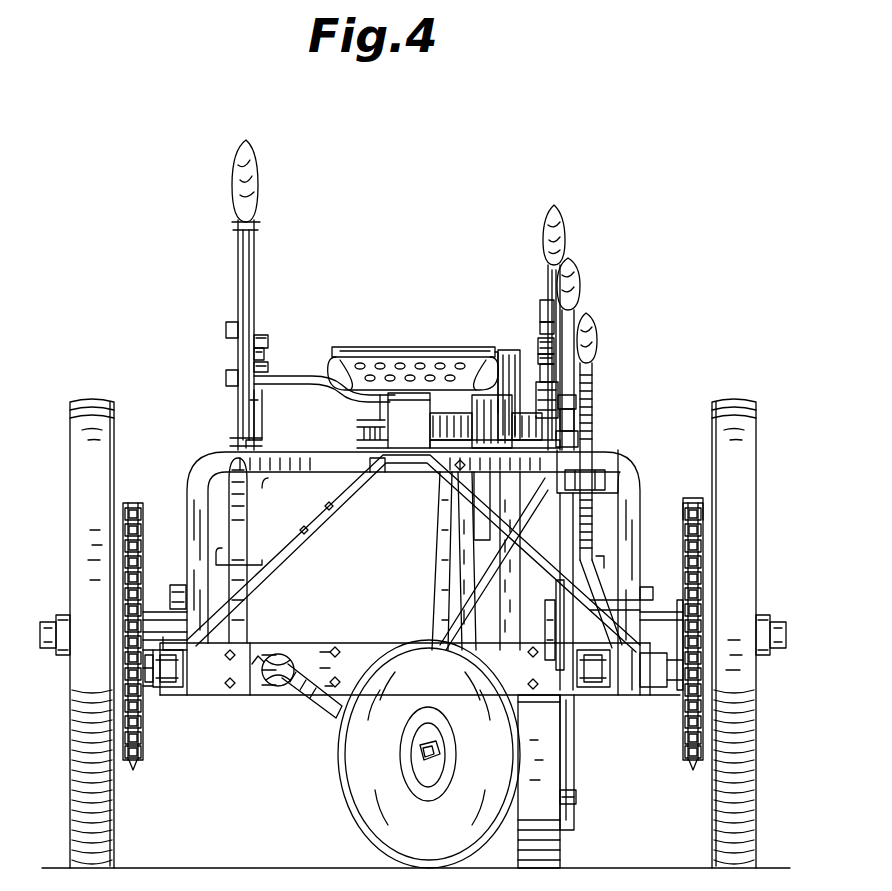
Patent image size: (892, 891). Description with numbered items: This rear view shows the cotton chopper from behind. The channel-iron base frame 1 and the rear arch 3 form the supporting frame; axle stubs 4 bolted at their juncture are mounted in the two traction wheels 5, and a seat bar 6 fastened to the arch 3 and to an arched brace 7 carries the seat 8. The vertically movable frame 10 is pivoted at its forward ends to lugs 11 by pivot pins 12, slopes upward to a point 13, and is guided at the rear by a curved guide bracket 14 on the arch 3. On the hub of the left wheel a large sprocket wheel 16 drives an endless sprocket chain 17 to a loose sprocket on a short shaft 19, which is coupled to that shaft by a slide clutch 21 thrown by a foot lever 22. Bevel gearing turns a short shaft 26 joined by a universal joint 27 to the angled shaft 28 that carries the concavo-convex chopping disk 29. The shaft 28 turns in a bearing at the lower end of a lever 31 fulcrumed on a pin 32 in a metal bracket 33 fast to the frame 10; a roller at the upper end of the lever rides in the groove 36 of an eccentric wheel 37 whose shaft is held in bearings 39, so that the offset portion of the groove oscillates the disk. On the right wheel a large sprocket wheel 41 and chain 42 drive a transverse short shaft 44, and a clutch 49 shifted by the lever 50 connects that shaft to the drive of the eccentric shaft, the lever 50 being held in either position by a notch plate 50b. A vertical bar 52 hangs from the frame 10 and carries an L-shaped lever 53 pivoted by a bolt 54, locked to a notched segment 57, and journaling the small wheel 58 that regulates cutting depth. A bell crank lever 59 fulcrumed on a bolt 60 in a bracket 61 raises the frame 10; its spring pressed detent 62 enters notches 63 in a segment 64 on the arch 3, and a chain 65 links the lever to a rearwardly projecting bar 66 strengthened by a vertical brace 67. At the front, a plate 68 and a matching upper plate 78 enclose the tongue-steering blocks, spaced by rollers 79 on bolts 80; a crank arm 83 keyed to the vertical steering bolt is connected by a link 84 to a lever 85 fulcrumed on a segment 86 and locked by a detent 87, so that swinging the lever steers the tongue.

The base frame 1 is at (360, 630).
The rear arch 3 is at (328, 470).
The axle stubs 4 is at (44, 628).
The traction wheels 5 is at (92, 418).
The seat bar 6 is at (409, 420).
The arched brace 7 is at (340, 528).
The seat 8 is at (430, 357).
The vertically movable frame 10 is at (440, 552).
The lugs 11 is at (560, 684).
The pivot pins 12 is at (545, 664).
The point 13 is at (462, 464).
The curved guide bracket 14 is at (488, 398).
The large sprocket wheel 16 is at (133, 770).
The endless sprocket chain 17 is at (148, 700).
The short shaft 19 is at (150, 684).
The slide clutch 21 is at (178, 688).
The lever 22 is at (250, 515).
The short shaft 26 is at (320, 642).
The universal joint 27 is at (274, 686).
The shaft 28 is at (310, 700).
The chopping disk 29 is at (352, 816).
The lever 31 is at (462, 572).
The pin 32 is at (470, 520).
The metal bracket 33 is at (486, 494).
The groove 36 is at (494, 358).
The eccentric wheel 37 is at (506, 352).
The bearings 39 is at (495, 430).
The large sprocket wheel 41 is at (693, 770).
The endless sprocket chain 42 is at (683, 522).
The short shaft 44 is at (672, 700).
The clutch 49 is at (605, 690).
The lever 50 is at (582, 350).
The notch plate 50b is at (606, 466).
The vertical bar 52 is at (562, 724).
The L-shaped lever 53 is at (598, 367).
The bolt 54 is at (576, 798).
The notched segment 57 is at (578, 406).
The small wheel 58 is at (560, 852).
The bell crank lever 59 is at (548, 292).
The bolt 60 is at (594, 388).
The bracket 61 is at (580, 434).
The spring pressed detent 62 is at (540, 318).
The notches 63 is at (540, 360).
The segment 64 is at (538, 400).
The chain 65 is at (606, 566).
The rearwardly projecting bar 66 is at (560, 580).
The vertical brace 67 is at (500, 600).
The plate 68 is at (378, 470).
The upper plate 78 is at (380, 395).
The spacing sleeves 79 is at (358, 422).
The bolts 80 is at (372, 466).
The crank arm 83 is at (283, 376).
The link 84 is at (228, 354).
The lever 85 is at (240, 270).
The segment 86 is at (258, 414).
The detent 87 is at (262, 394).